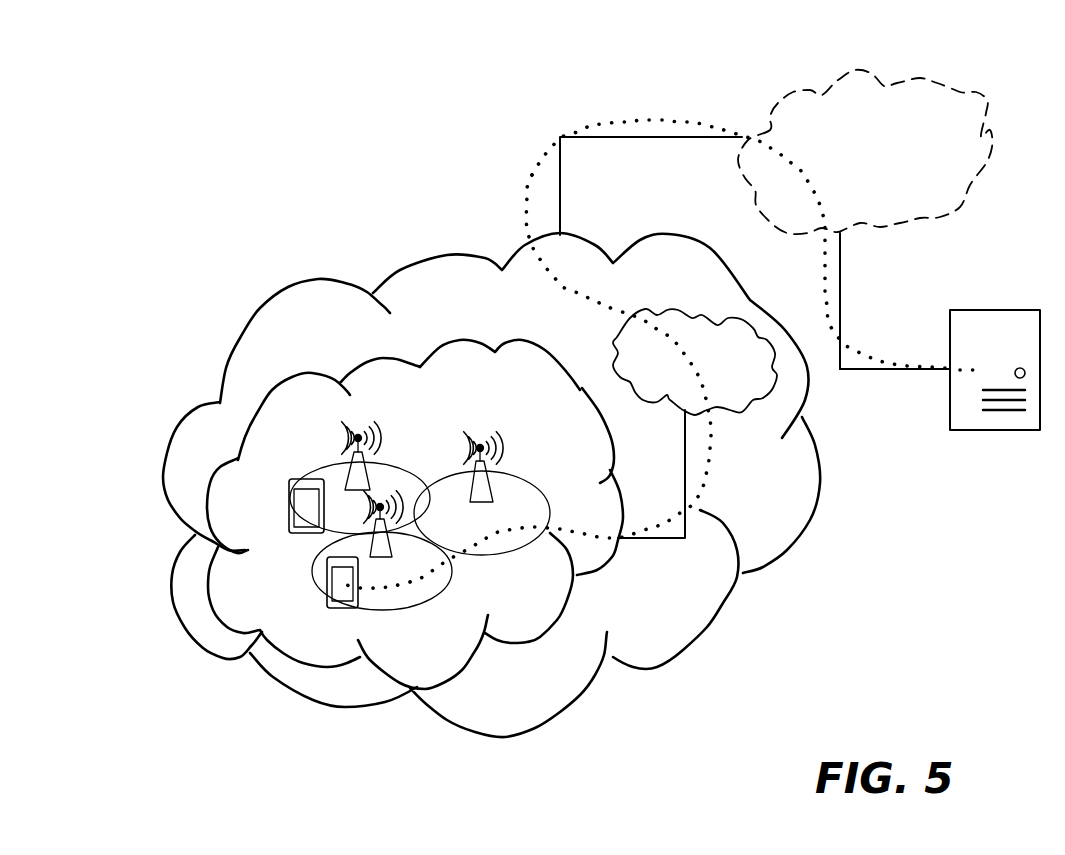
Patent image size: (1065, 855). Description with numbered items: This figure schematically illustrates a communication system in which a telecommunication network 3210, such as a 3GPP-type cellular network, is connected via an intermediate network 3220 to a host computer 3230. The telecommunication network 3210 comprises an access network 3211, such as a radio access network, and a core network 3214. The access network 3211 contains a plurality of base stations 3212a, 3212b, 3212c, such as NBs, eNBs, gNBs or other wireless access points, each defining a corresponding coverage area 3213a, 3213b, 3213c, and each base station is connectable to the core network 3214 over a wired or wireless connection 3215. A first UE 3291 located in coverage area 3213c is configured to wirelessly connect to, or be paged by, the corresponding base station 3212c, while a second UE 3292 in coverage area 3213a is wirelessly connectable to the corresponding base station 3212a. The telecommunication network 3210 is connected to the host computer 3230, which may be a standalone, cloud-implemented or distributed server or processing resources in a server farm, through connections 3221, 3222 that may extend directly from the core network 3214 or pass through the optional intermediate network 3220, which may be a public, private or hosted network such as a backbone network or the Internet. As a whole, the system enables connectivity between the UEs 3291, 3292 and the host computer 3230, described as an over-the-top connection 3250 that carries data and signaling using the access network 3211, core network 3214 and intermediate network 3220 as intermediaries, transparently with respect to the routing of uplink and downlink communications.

The telecommunication network 3210 is at (468, 299).
The access network 3211 is at (418, 399).
The base station 3212a is at (392, 557).
The base station 3212b is at (497, 450).
The base station 3212c is at (333, 440).
The coverage area 3213a is at (452, 565).
The coverage area 3213b is at (550, 515).
The coverage area 3213c is at (326, 476).
The core network 3214 is at (723, 371).
The connection 3215 is at (690, 457).
The intermediate network 3220 is at (846, 161).
The connection 3221 is at (647, 138).
The connection 3222 is at (900, 370).
The host computer 3230 is at (995, 383).
The OTT connection 3250 is at (537, 163).
The first user equipment 3291 is at (290, 529).
The second user equipment 3292 is at (327, 607).